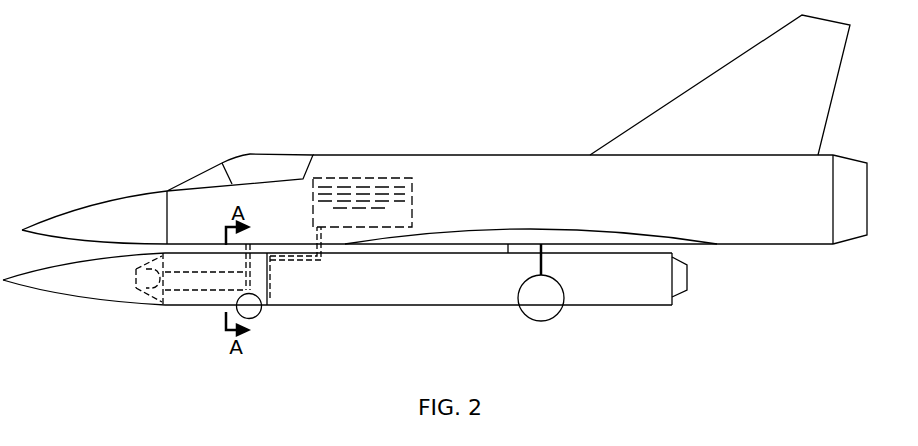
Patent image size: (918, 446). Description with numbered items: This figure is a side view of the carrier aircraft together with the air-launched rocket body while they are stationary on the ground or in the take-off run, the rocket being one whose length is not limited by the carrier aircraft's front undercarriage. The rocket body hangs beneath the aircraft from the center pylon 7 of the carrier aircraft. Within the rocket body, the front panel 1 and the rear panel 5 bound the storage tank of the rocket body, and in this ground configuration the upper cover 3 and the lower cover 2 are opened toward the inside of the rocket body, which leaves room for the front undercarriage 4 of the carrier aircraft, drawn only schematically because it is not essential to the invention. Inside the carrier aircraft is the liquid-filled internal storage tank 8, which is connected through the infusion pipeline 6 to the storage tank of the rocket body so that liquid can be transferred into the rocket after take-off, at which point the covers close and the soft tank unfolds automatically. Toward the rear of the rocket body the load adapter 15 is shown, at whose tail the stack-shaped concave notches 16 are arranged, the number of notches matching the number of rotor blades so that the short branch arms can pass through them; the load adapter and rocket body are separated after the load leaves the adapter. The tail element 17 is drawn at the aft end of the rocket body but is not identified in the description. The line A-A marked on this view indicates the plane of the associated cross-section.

The front panel of the storage tank of the rocket body 1 is at (160, 297).
The lower cover 2 is at (182, 296).
The upper cover 3 is at (210, 262).
The front undercarriage of the carrier aircraft 4 is at (250, 310).
The rear panel of the storage tank of the rocket body 5 is at (272, 298).
The infusion pipeline 6 is at (294, 260).
The center pylon of the carrier aircraft 7 is at (412, 247).
The liquid-filled internal storage tank 8 is at (366, 142).
The load adapter 15 is at (136, 279).
The stack-shaped concave notches 16 is at (150, 283).
The tail cone 17 is at (678, 277).